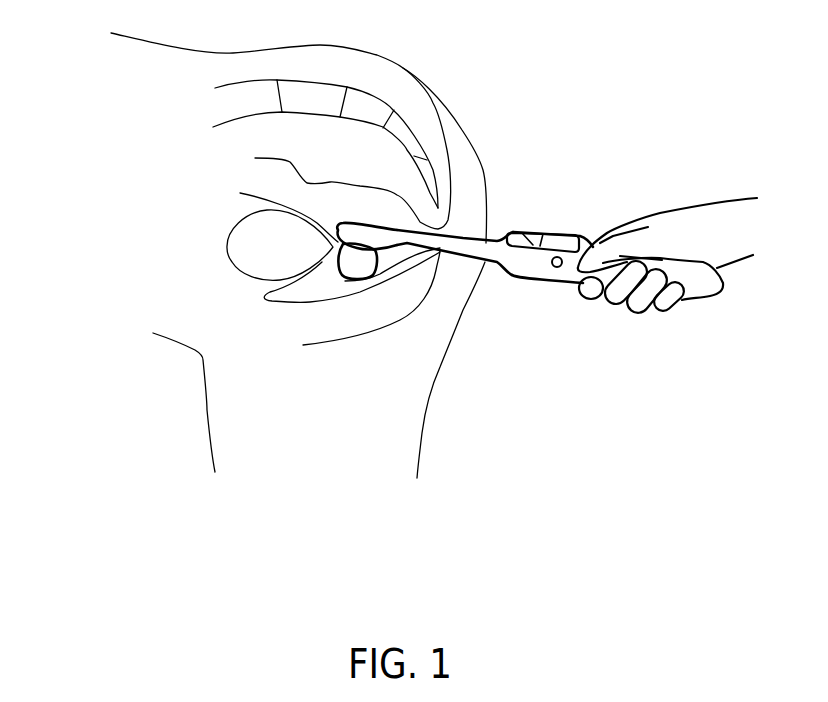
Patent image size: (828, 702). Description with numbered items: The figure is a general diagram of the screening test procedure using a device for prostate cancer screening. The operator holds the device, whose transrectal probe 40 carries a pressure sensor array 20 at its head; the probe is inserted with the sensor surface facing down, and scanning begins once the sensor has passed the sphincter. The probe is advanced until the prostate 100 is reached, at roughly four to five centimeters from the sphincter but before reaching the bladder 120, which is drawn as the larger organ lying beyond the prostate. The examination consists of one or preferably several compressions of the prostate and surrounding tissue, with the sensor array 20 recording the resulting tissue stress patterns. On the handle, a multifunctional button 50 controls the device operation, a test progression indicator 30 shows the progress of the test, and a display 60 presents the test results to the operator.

The pressure sensor array 20 is at (367, 240).
The test progression indicator 30 is at (537, 228).
The transrectal probe 40 is at (465, 247).
The multifunctional button 50 is at (559, 268).
The display 60 is at (550, 241).
The prostate 100 is at (360, 263).
The bladder 120 is at (243, 236).